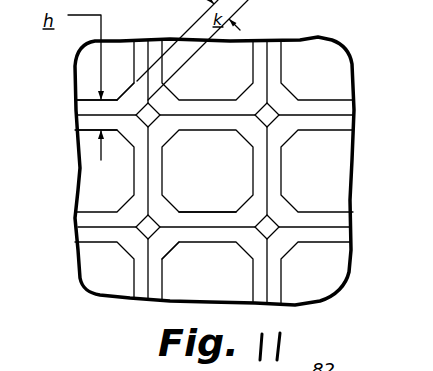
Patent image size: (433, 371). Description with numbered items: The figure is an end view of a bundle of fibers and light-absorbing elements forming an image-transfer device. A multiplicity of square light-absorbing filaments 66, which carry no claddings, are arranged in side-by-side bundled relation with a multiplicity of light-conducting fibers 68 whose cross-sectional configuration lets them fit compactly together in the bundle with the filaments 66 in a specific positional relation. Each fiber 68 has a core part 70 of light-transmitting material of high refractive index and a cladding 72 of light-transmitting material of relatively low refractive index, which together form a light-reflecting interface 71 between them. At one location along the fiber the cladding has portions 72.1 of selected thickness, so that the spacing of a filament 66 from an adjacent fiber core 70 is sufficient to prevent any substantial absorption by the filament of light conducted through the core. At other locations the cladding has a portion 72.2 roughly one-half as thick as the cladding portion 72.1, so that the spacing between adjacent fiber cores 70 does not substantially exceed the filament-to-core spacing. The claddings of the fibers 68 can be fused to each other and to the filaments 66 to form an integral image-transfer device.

The square light-absorbing filament 66 is at (139, 234).
The light-conducting fiber 68 is at (82, 64).
The core part 70 is at (232, 196).
The light-reflecting interface 71 is at (165, 165).
The cladding 72 is at (153, 180).
The cladding portion 72.1 is at (135, 101).
The cladding portion 72.2 is at (87, 106).